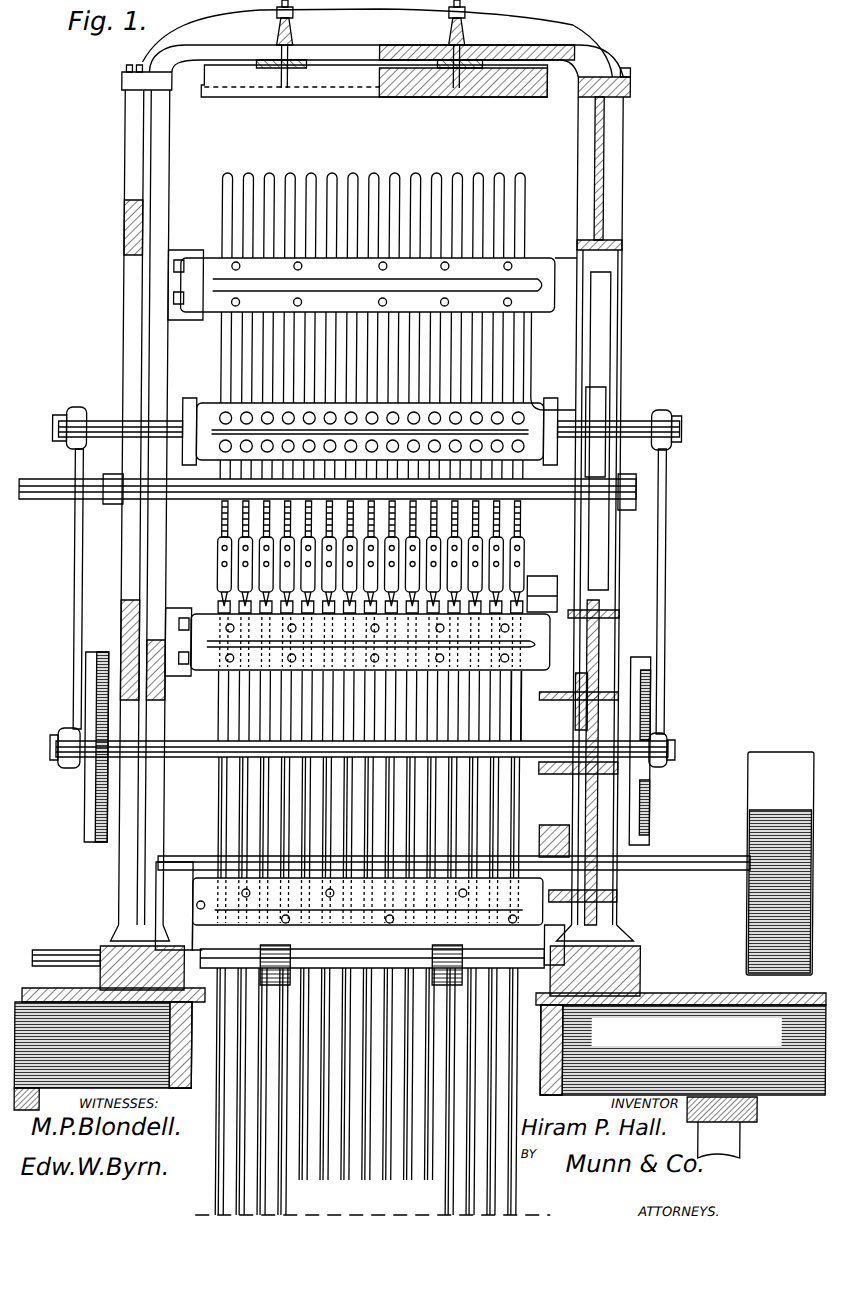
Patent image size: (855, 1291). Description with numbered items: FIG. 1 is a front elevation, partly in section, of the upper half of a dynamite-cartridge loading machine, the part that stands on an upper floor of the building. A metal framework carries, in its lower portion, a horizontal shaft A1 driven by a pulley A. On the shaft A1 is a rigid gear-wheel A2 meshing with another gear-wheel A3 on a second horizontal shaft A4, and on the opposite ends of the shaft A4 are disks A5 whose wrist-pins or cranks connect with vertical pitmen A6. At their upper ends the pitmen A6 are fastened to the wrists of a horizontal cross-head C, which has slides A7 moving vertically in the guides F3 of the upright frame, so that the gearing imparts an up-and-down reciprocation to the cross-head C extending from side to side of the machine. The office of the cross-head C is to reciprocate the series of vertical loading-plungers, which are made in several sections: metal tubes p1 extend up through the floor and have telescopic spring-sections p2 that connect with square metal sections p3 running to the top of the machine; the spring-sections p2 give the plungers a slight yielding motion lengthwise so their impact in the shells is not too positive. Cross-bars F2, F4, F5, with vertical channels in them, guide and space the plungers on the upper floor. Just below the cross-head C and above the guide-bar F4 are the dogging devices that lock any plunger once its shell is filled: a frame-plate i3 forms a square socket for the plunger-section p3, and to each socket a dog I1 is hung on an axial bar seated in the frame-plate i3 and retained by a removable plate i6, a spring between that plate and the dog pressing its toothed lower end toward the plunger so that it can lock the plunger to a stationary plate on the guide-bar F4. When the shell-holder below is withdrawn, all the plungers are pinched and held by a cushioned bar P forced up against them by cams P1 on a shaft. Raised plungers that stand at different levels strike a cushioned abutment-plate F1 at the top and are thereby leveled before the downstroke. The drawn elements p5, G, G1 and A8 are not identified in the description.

The cushioned abutment-plate F1 is at (420, 96).
The cross-bar F2 is at (388, 306).
The guides F3 is at (605, 337).
The guide-bar F4 is at (515, 640).
The cross-bar F5 is at (356, 897).
The square metal plunger-sections p3 is at (528, 222).
The telescopic spring-sections p2 is at (232, 780).
The metal tubes p1 is at (238, 1058).
The pin rod p5 is at (530, 708).
The cross-head C is at (527, 412).
The rock shaft G is at (522, 528).
The rock shaft collar G1 is at (202, 478).
The frame-plate i3 is at (222, 537).
The removable plate i6 is at (225, 569).
The dog I1 is at (565, 580).
The pulley A is at (780, 863).
The horizontal shaft A1 is at (454, 852).
The gear-wheel A2 is at (541, 841).
The gear-wheel A3 is at (588, 706).
The horizontal shaft A4 is at (204, 732).
The disks A5 is at (91, 800).
The vertical pitmen A6 is at (79, 584).
The slides A7 is at (599, 413).
The right connecting rod A8 is at (672, 578).
The cushioned bar P is at (212, 942).
The cams P1 is at (492, 976).